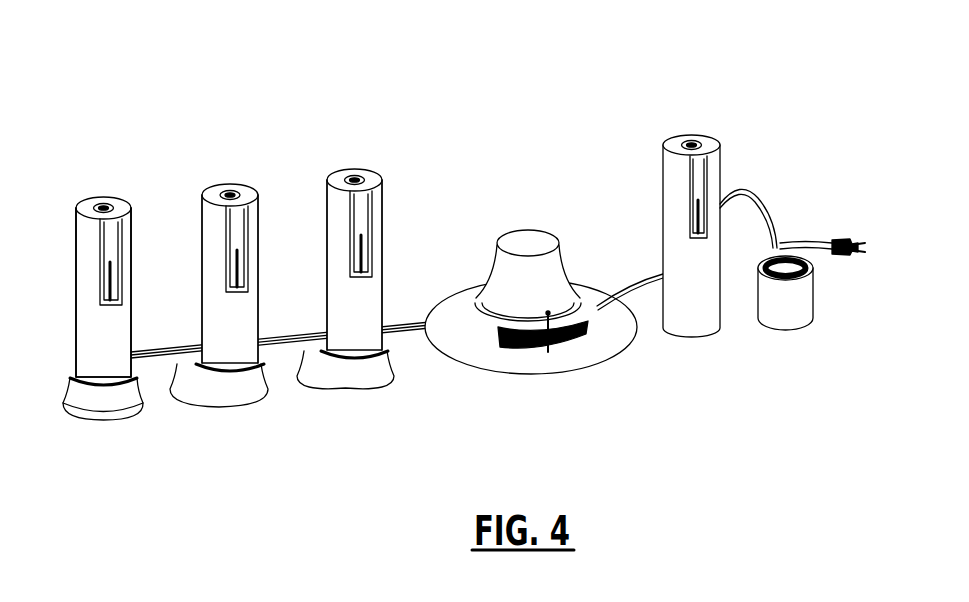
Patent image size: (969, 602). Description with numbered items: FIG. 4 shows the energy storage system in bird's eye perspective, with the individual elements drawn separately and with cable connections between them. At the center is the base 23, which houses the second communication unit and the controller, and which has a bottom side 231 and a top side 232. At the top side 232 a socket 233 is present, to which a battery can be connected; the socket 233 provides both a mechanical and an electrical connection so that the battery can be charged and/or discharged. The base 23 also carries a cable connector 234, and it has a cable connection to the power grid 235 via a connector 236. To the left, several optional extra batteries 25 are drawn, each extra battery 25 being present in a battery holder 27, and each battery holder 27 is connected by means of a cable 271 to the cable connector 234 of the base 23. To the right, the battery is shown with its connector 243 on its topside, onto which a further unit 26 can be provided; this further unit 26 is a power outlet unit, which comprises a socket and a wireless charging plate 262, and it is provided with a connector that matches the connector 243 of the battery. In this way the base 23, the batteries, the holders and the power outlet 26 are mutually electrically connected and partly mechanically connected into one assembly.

The extra battery 25 is at (106, 197).
The cable 271 is at (160, 308).
The battery holder 27 is at (143, 462).
The base 23 is at (567, 311).
The bottom side 231 is at (526, 232).
The top side 232 is at (603, 373).
The socket 233 is at (536, 217).
The cable connector 234 is at (482, 370).
The connector 236 is at (612, 335).
The connector 243 is at (696, 103).
The wireless charging plate 262 is at (784, 218).
The power outlet 26 is at (800, 306).
The power grid 235 is at (846, 195).